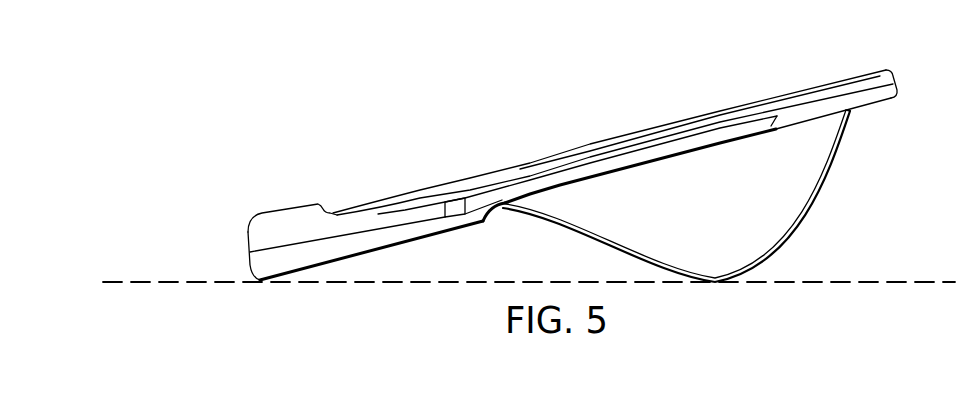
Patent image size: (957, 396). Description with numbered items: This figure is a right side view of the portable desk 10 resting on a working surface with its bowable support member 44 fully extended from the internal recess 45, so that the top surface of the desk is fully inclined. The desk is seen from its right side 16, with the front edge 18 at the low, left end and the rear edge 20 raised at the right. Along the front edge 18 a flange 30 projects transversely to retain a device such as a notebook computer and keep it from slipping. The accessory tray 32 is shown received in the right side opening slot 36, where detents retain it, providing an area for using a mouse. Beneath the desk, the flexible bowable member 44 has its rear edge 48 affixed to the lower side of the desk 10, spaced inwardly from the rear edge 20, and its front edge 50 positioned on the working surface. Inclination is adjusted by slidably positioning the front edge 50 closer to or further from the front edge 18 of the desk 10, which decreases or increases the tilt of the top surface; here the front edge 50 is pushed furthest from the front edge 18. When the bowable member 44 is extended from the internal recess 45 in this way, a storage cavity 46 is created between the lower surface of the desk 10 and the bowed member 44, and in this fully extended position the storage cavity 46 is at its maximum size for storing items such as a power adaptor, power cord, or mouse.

The portable desk 10 is at (340, 82).
The right side 16 is at (802, 102).
The front edge 18 is at (248, 241).
The rear edge 20 is at (893, 79).
The flange 30 is at (282, 212).
The accessory tray 32 is at (614, 169).
The right side opening slot 36 is at (466, 197).
The bowable support member 44 is at (823, 210).
The internal recess 45 is at (368, 236).
The storage cavity 46 is at (772, 196).
The rear edge of bowable member 48 is at (853, 112).
The front edge of bowable member 50 is at (497, 212).